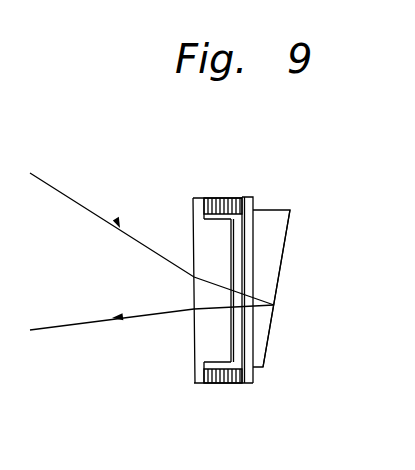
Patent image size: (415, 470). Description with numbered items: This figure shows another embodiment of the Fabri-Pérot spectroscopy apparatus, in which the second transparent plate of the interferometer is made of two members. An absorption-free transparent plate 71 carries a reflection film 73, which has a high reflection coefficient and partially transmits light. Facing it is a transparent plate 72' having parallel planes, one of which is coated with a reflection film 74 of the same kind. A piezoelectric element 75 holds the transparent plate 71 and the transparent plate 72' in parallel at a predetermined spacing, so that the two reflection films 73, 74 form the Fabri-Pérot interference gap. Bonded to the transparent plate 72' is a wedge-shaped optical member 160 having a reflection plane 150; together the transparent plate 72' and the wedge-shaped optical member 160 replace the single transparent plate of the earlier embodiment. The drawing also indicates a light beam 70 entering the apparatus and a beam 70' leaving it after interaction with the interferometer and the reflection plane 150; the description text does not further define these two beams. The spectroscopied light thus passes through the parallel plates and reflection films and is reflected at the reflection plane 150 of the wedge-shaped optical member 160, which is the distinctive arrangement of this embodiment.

The incident light beam 70 is at (152, 221).
The reflected light beam 70' is at (152, 343).
The absorption-free transparent plate 71 is at (202, 229).
The transparent plate 72' is at (249, 253).
The reflection film 73 is at (232, 332).
The reflection film 74 is at (253, 220).
The piezoelectric element 75 is at (218, 198).
The reflection plane 150 is at (285, 254).
The wedge-shaped optical member 160 is at (270, 237).